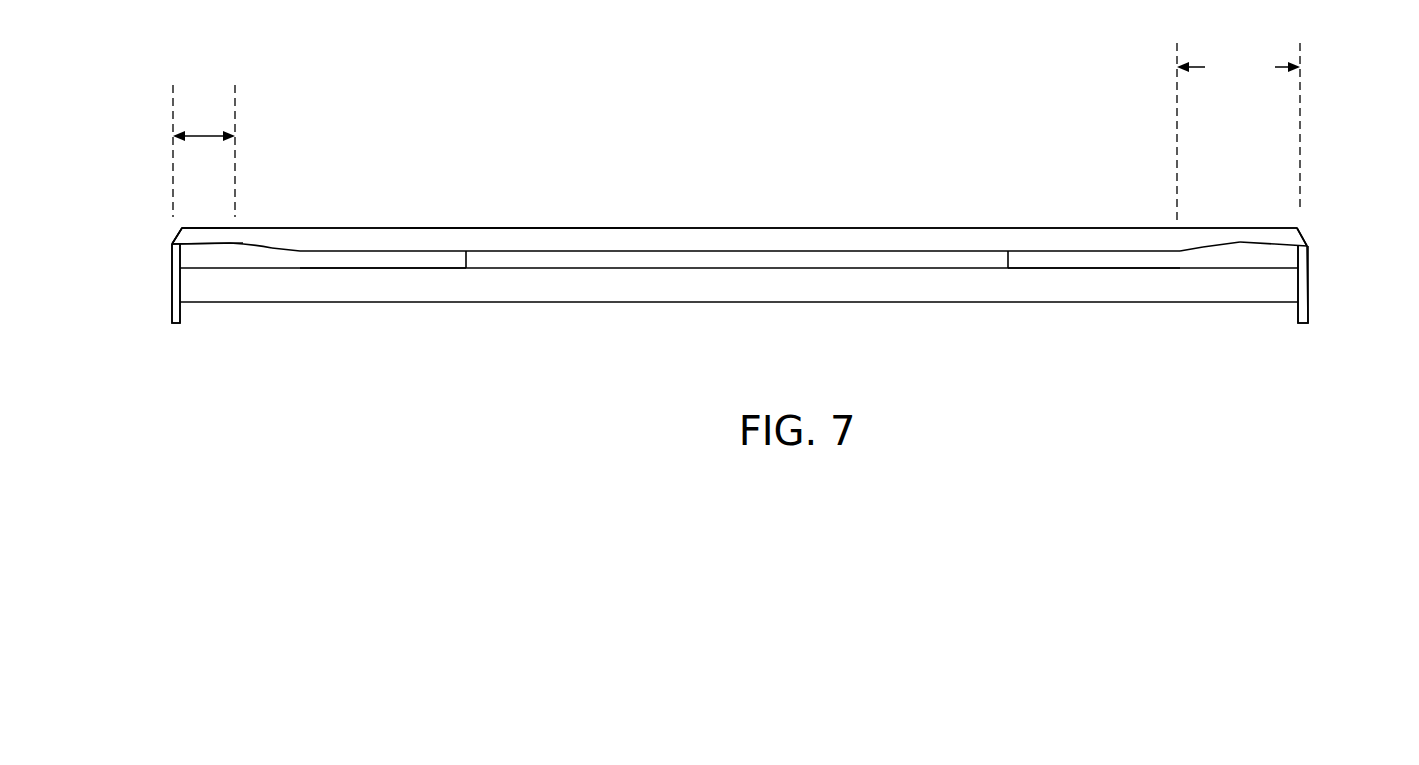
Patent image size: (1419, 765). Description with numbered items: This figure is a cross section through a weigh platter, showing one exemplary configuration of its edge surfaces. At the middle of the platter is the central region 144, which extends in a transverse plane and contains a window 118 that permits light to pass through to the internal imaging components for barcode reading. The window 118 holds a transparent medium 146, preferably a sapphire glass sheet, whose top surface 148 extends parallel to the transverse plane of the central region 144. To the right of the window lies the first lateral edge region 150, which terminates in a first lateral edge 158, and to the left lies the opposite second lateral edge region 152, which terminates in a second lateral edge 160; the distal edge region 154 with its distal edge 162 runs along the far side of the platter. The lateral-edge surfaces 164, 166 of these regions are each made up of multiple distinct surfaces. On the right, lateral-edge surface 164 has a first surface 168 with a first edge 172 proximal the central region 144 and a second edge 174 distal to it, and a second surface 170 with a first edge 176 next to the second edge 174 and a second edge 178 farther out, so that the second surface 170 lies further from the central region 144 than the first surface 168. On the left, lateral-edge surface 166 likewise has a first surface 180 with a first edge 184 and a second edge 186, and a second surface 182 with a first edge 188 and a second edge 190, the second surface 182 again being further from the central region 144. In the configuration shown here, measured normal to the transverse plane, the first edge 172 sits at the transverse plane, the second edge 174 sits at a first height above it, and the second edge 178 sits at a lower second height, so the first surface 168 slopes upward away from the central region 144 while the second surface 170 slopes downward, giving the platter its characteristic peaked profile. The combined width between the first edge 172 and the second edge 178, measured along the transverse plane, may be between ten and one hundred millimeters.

The window 118 is at (823, 250).
The central region 144 is at (593, 302).
The transparent medium 146 is at (738, 250).
The top surface 148 is at (663, 250).
The first lateral edge region 150 is at (1340, 152).
The second lateral edge region 152 is at (134, 236).
The distal edge region 154 is at (518, 136).
The first lateral edge 158 is at (1308, 273).
The second lateral edge 160 is at (172, 298).
The distal edge 162 is at (885, 227).
The lateral-edge surface 164 is at (1304, 208).
The lateral-edge surface 166 is at (190, 202).
The first surface 168 is at (1203, 250).
The second surface 170 is at (1270, 250).
The first edge 172 is at (1178, 250).
The second edge 174 is at (1240, 242).
The first edge 176 is at (1240, 242).
The second edge 178 is at (1308, 247).
The first surface 180 is at (272, 248).
The second surface 182 is at (208, 248).
The first edge 184 is at (300, 251).
The second edge 186 is at (243, 243).
The first edge 188 is at (237, 243).
The second edge 190 is at (172, 250).